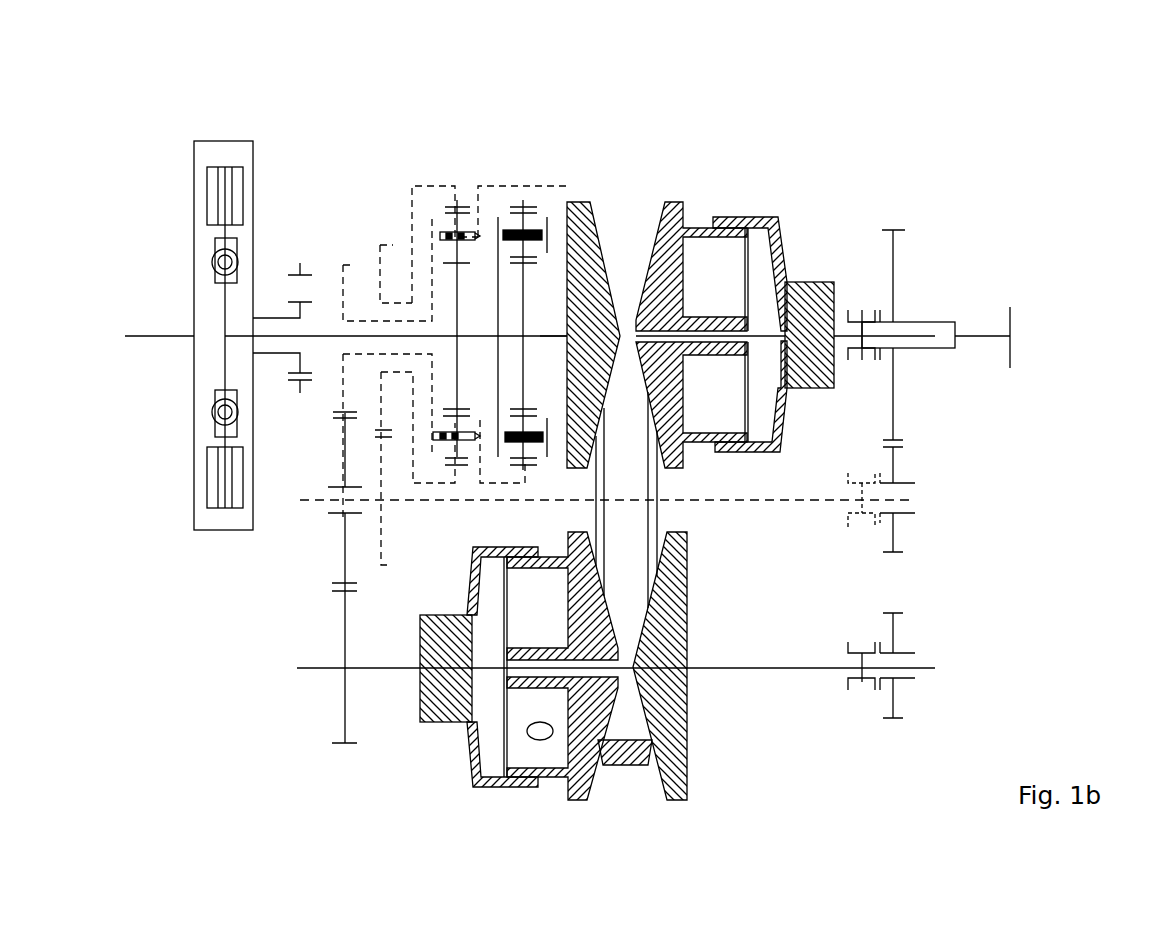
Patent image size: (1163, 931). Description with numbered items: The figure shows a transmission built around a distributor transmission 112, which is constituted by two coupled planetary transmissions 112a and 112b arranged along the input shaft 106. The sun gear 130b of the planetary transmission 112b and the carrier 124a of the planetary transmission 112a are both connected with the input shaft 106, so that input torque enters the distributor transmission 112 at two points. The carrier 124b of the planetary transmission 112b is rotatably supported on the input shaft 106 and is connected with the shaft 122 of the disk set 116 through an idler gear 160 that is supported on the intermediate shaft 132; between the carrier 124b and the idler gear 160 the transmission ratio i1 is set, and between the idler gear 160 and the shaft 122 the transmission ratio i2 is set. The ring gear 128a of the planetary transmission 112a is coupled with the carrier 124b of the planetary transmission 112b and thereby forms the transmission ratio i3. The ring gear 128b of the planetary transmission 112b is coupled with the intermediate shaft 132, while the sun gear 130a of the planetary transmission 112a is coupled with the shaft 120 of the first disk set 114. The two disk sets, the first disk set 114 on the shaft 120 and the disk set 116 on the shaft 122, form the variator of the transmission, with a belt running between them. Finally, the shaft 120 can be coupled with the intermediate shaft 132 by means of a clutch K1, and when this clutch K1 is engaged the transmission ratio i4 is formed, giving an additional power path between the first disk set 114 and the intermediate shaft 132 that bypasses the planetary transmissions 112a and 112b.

The input shaft 106 is at (322, 335).
The distributor transmission 112 is at (487, 162).
The planetary transmission 112a is at (513, 178).
The planetary transmission 112b is at (430, 186).
The ring gear 128a is at (547, 215).
The ring gear 128b is at (440, 183).
The sun gear 130a is at (552, 333).
The sun gear 130b is at (457, 310).
The shaft 120 is at (525, 300).
The carrier 124a is at (500, 382).
The carrier 124b is at (410, 443).
The first disk set 114 is at (703, 476).
The disk set 116 is at (703, 778).
The shaft 122 is at (752, 668).
The intermediate shaft 132 is at (437, 502).
The idler gear 160 is at (345, 560).
The transmission ratio i1 is at (319, 418).
The transmission ratio i2 is at (319, 607).
The transmission ratio i3 is at (399, 413).
The transmission ratio i4 is at (932, 441).
The clutch K1 is at (864, 485).